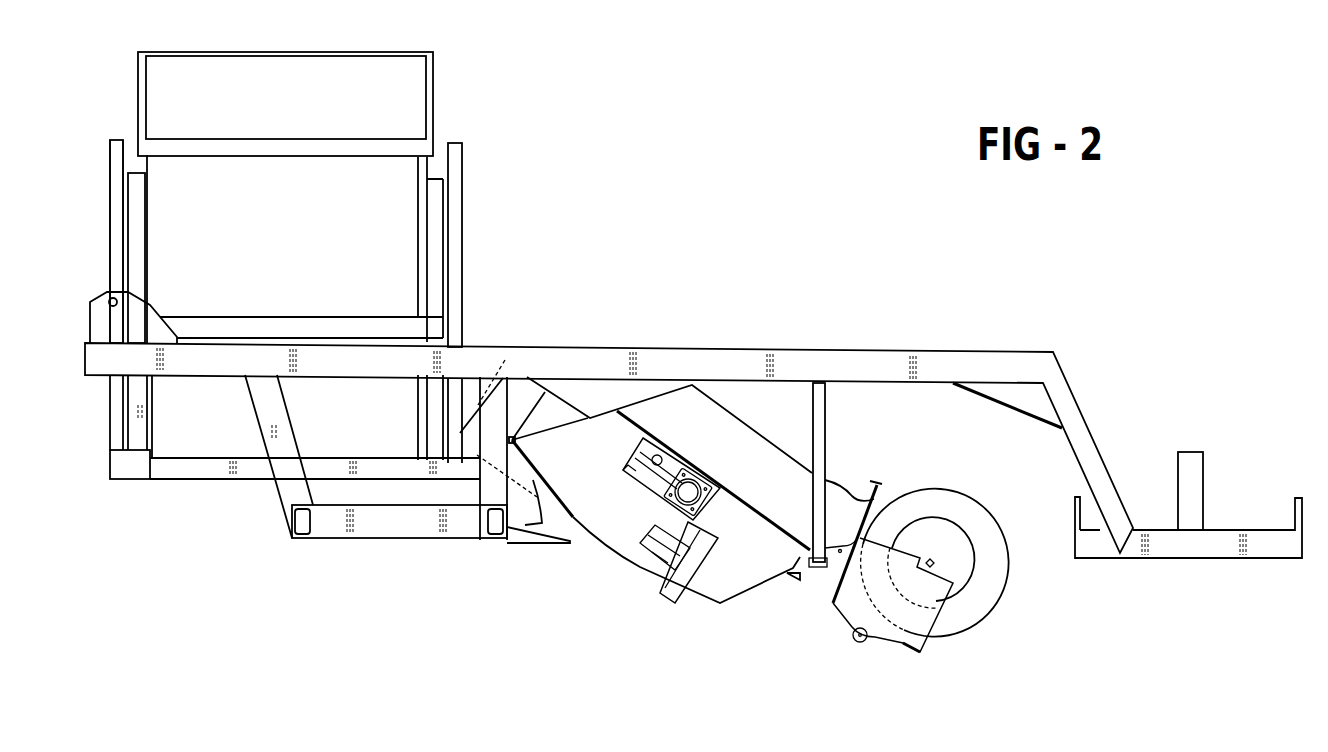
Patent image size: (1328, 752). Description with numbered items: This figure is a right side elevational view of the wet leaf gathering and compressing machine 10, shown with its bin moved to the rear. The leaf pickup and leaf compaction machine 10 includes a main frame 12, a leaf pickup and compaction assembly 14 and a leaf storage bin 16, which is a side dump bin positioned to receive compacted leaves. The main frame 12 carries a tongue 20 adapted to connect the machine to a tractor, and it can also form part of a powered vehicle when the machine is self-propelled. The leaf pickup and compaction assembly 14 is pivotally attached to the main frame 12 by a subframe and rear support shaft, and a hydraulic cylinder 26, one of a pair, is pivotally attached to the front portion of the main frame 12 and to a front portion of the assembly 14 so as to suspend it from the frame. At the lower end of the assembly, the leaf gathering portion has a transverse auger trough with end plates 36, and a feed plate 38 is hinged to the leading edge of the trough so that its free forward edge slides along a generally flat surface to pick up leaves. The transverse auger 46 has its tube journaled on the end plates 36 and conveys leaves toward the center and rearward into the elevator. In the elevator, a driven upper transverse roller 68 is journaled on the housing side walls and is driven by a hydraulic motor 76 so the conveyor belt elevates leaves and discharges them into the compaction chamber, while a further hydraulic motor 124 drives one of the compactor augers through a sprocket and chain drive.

The leaf pickup and leaf compaction machine 10 is at (688, 188).
The main frame 12 is at (282, 492).
The leaf pickup and compaction assembly 14 is at (430, 168).
The leaf storage bin 16 is at (147, 163).
The tongue 20 is at (1228, 553).
The hydraulic cylinder 26 is at (827, 413).
The end plate 36 is at (878, 638).
The feed plate 38 is at (921, 655).
The transverse auger 46 is at (1004, 563).
The driven upper transverse roller 68 is at (686, 493).
The hydraulic motor 76 is at (652, 438).
The hydraulic motor 124 is at (657, 555).